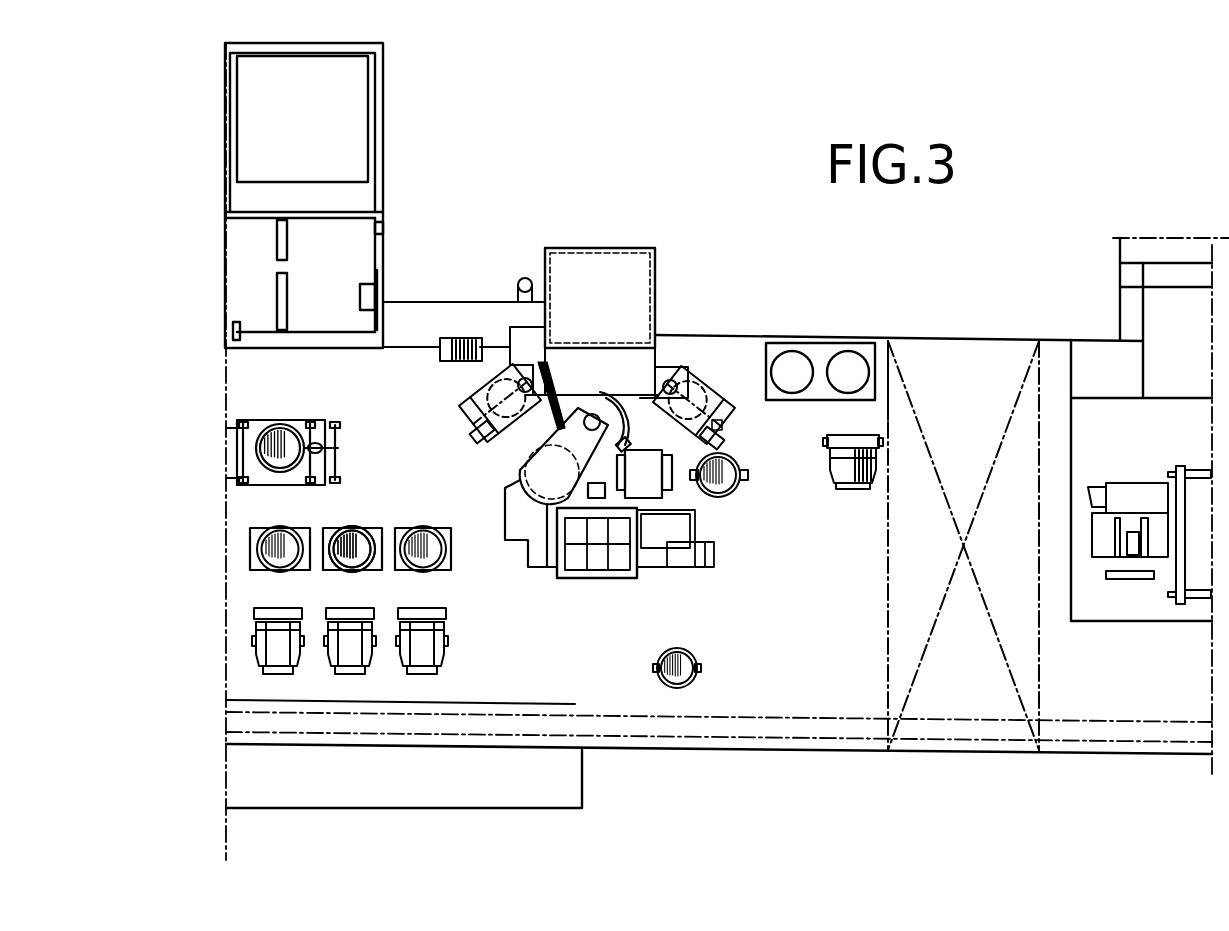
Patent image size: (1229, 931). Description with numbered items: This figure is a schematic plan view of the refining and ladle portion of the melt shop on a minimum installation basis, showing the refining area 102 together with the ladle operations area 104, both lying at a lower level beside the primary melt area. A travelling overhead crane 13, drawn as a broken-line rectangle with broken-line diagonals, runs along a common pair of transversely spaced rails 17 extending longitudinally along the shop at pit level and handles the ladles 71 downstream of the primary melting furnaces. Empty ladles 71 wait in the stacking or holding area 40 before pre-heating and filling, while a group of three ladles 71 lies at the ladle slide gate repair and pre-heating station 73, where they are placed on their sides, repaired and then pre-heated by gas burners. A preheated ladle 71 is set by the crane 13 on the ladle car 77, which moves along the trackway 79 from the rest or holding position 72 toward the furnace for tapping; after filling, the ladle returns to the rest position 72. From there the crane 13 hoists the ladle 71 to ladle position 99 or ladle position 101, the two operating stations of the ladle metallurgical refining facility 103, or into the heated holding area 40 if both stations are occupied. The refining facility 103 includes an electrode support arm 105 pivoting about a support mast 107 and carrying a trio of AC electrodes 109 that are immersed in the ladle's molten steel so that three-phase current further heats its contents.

The travelling overhead crane 13 is at (973, 758).
The rails 17 is at (742, 346).
The stacking or holding area 40 is at (356, 525).
The ladle 71 is at (288, 453).
The rest or holding position 72 is at (263, 402).
The ladle slide gate repair and pre-heating station 73 is at (422, 680).
The ladle car 77 is at (312, 414).
The trackway 79 is at (236, 420).
The ladle position 99 is at (655, 474).
The ladle position 101 is at (505, 462).
The refining area 102 is at (597, 582).
The ladle metallurgical refining facility 103 is at (595, 296).
The ladle operations area 104 is at (805, 700).
The electrode support arm 105 is at (557, 393).
The support mast 107 is at (606, 400).
The trio of AC electrodes 109 is at (535, 465).